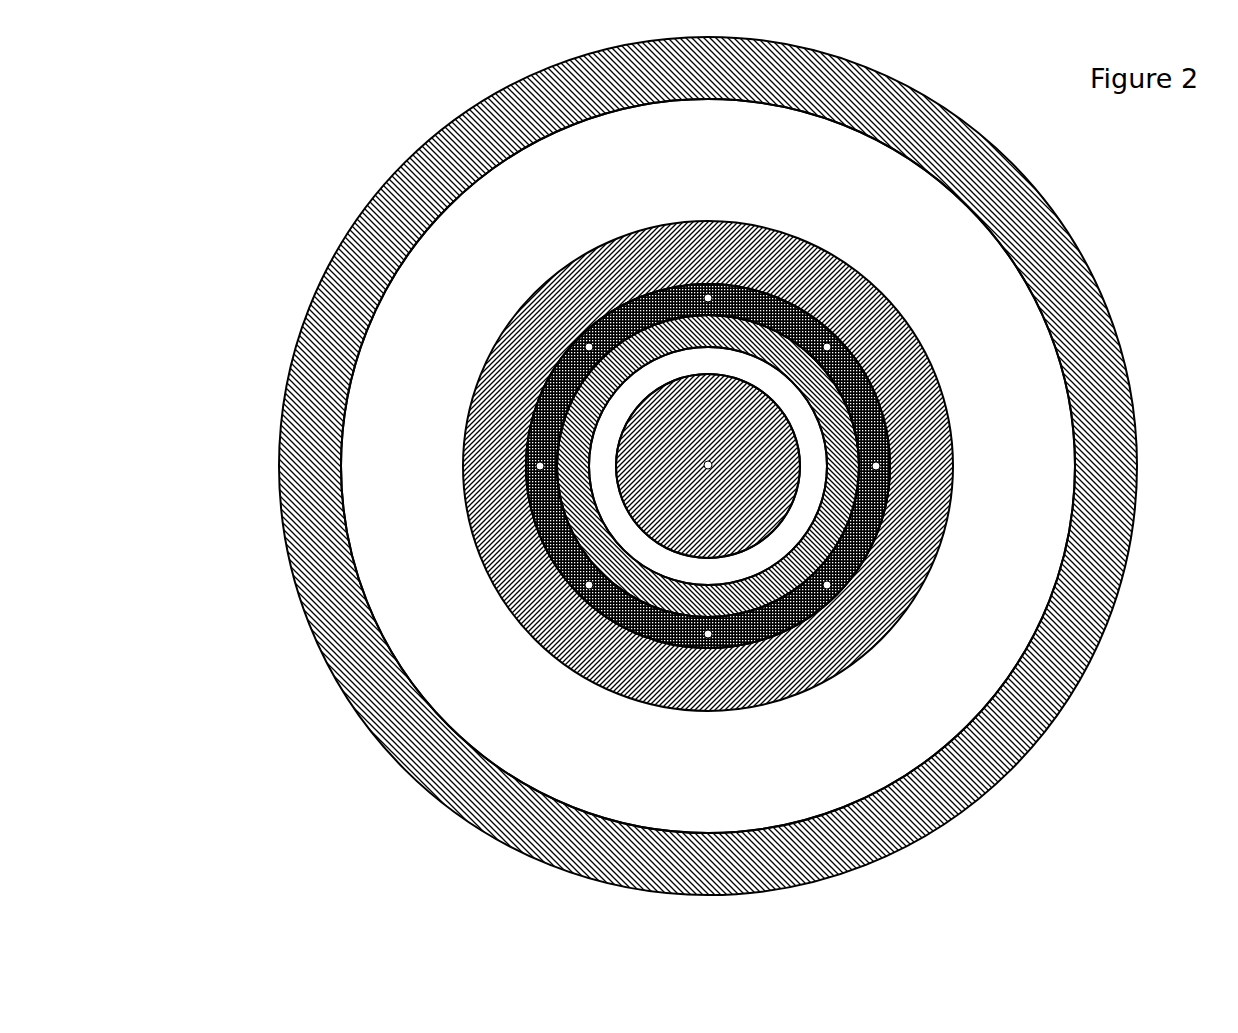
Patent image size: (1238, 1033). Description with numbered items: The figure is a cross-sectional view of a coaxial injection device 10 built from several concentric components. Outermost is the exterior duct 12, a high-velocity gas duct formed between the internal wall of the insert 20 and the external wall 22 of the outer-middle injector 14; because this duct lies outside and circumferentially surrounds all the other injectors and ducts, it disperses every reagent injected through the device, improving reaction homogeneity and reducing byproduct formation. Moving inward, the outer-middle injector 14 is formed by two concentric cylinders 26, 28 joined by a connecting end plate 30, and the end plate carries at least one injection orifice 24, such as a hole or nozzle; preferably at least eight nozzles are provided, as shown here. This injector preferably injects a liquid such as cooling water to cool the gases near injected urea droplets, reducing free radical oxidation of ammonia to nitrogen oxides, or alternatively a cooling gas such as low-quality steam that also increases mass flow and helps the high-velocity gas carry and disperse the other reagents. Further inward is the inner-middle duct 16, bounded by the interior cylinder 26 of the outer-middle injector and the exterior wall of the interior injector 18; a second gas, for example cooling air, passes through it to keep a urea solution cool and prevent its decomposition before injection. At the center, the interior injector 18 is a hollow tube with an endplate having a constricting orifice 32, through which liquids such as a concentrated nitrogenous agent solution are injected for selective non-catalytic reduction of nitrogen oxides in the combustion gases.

The coaxial injection device 10 is at (246, 126).
The insert 20 is at (1070, 235).
The exterior duct 12 is at (1002, 328).
The external wall 22 is at (912, 396).
The outer-middle injector 14 is at (900, 443).
The inner-middle duct 16 is at (902, 477).
The connecting end plate 30 is at (802, 504).
The interior injector 18 is at (730, 527).
The interior cylinder 26 is at (870, 548).
The concentric cylinder 28 is at (880, 605).
The injection orifice 24 is at (586, 582).
The constricting orifice 32 is at (672, 535).